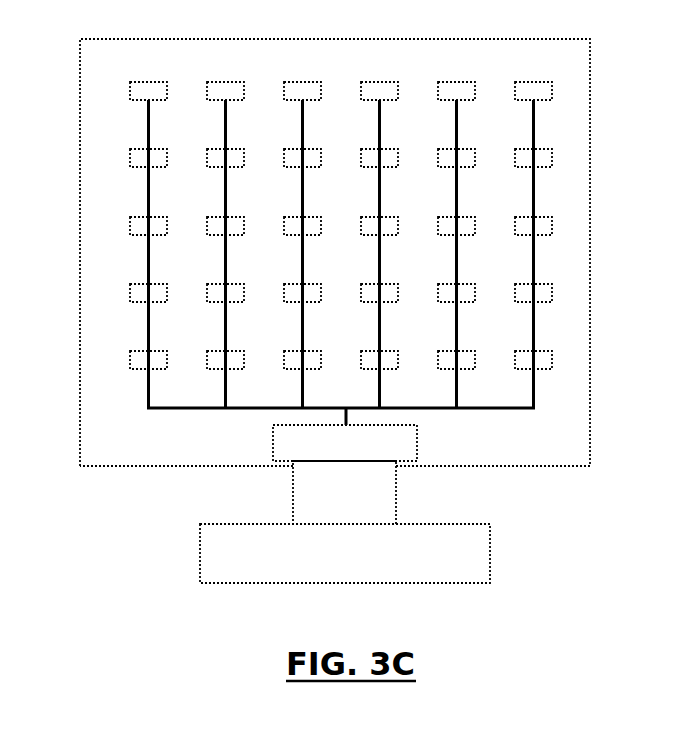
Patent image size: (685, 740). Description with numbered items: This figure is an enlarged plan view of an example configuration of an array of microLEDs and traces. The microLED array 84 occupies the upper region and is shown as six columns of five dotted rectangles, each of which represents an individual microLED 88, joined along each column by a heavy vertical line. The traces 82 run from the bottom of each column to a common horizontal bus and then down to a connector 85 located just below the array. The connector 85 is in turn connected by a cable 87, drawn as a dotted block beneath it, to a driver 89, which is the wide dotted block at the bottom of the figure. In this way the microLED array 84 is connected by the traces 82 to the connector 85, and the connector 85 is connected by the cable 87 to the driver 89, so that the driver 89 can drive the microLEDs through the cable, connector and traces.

The traces 82 is at (170, 433).
The microLED array 84 is at (498, 451).
The connector 85 is at (273, 447).
The cable 87 is at (293, 496).
The pixel 88 is at (550, 90).
The driver 89 is at (200, 552).